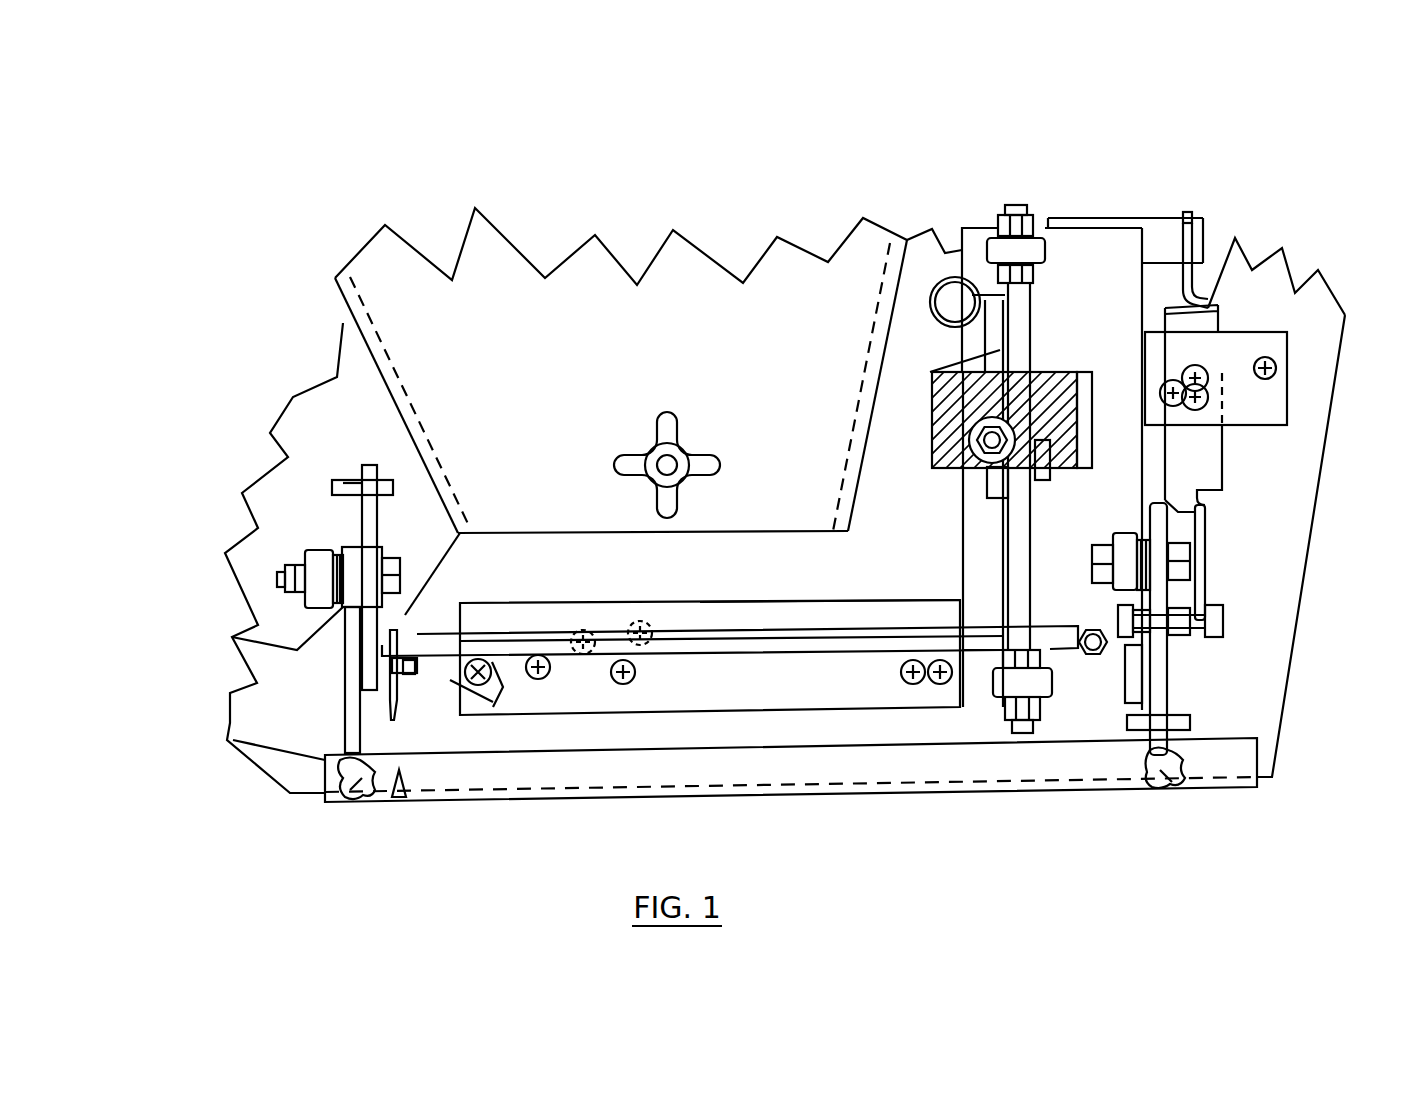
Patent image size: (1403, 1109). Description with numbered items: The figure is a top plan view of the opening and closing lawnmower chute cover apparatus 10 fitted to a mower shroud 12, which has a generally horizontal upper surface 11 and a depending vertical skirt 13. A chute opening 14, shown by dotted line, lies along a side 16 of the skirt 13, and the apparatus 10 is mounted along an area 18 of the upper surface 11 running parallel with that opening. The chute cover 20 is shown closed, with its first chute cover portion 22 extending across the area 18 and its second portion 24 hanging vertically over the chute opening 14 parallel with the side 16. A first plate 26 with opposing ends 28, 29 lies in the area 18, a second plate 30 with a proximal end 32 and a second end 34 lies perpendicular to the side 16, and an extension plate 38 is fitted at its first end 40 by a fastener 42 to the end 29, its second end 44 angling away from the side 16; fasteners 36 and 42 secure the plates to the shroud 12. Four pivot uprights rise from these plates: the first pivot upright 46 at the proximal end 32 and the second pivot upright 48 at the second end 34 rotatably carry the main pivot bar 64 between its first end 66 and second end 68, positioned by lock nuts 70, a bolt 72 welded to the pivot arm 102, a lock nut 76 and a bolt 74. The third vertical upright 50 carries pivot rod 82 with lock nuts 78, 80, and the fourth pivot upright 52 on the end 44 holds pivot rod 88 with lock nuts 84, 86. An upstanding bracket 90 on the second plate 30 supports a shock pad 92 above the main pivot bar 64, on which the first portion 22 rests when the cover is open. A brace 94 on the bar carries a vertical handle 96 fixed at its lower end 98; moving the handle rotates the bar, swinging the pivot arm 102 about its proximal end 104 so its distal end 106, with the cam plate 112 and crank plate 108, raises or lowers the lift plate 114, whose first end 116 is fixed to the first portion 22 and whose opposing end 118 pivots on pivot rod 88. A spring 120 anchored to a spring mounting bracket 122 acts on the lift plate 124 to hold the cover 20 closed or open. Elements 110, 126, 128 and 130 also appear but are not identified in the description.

The opening and closing lawnmower chute cover apparatus 10 is at (560, 560).
The upper surface 11 is at (1262, 505).
The shroud 12 is at (1298, 477).
The skirt 13 is at (1305, 545).
The chute opening 14 is at (399, 775).
The side 16 is at (263, 773).
The area 18 is at (683, 727).
The chute cover 20 is at (293, 757).
The first chute cover portion 22 is at (608, 770).
The second portion 24 is at (652, 797).
The first plate 26 is at (705, 620).
The end 28 is at (935, 615).
The second end 29 is at (475, 612).
The second plate 30 is at (985, 552).
The proximal end 32 is at (965, 690).
The second end 34 is at (1100, 250).
The fasteners 36 is at (585, 630).
The extension plate 38 is at (458, 530).
The first end 40 is at (493, 703).
The fastener 42 is at (482, 685).
The second end 44 is at (252, 683).
The first pivot upright 46 is at (1053, 697).
The second pivot upright 48 is at (1035, 247).
The third vertical upright 50 is at (1205, 453).
The fourth pivot upright 52 is at (293, 557).
The main pivot bar 64 is at (1015, 525).
The first end 66 is at (1025, 722).
The second end 68 is at (1020, 212).
The lock nuts 70 is at (993, 682).
The bolt 72 is at (1003, 655).
The bolt 74 is at (1033, 279).
The lock nut 76 is at (997, 220).
The lock nut 78 is at (1092, 567).
The lock nut 80 is at (1182, 569).
The pivot rod 82 is at (1190, 553).
The lock nut 84 is at (368, 522).
The lock nut 86 is at (278, 566).
The pivot rod 88 is at (280, 578).
The upstanding bracket 90 is at (1043, 471).
The shock pad 92 is at (940, 438).
The brace 94 is at (960, 363).
The handle 96 is at (940, 280).
The lower end 98 is at (948, 352).
The pivot arm 102 is at (755, 640).
The proximal end 104 is at (1065, 636).
The distal end 106 is at (405, 617).
The crank plate 108 is at (395, 722).
The block 110 is at (410, 675).
The cam plate 112 is at (393, 477).
The lift plate 114 is at (350, 707).
The first end 116 is at (333, 800).
The opposing end 118 is at (320, 557).
The spring 120 is at (1210, 302).
The spring mounting bracket 122 is at (1185, 222).
The lift plate 124 is at (1160, 660).
The base end 126 is at (1160, 772).
The bracket plate 128 is at (1165, 508).
The bracket 130 is at (343, 483).